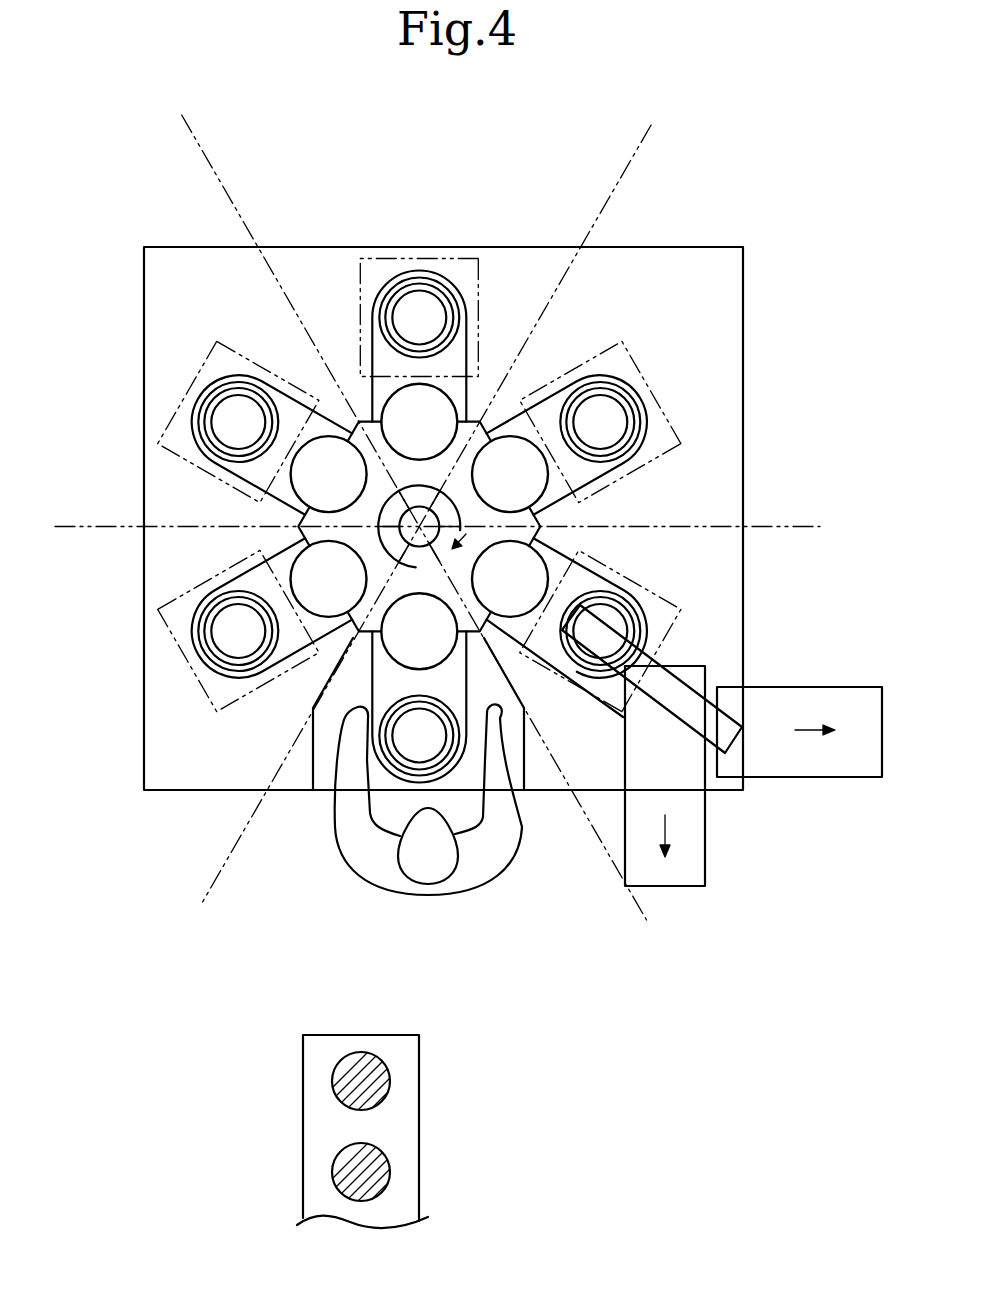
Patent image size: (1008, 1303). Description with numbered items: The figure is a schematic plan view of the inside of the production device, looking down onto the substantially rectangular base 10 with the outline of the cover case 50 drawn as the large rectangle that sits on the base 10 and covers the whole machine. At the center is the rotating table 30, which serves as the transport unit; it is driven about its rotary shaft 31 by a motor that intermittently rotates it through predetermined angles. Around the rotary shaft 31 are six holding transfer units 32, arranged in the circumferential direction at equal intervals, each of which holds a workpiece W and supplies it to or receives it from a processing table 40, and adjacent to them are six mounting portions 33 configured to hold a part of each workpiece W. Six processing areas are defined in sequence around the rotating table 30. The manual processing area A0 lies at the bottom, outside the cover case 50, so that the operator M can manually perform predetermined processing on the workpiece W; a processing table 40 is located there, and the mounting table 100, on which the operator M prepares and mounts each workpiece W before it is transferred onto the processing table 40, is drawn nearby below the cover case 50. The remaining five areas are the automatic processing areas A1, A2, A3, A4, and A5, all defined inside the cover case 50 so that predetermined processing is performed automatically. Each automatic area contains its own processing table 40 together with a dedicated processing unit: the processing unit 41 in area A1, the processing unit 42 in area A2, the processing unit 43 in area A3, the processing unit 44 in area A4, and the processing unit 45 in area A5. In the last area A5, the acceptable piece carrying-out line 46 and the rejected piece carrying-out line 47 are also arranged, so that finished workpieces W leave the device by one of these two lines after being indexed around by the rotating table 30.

The base 10 is at (672, 279).
The cover case 50 is at (318, 247).
The rotating table 30 is at (442, 523).
The rotary shaft 31 is at (432, 543).
The holding transfer unit 32 is at (202, 397).
The mounting portion 33 is at (443, 393).
The processing table 40 is at (227, 393).
The processing unit 41 is at (252, 693).
The processing unit 42 is at (263, 367).
The processing unit 43 is at (358, 280).
The processing unit 44 is at (612, 332).
The processing unit 45 is at (681, 607).
The acceptable piece carrying-out line 46 is at (686, 887).
The rejected piece carrying-out line 47 is at (815, 777).
The operator M is at (495, 887).
The mounting table 100 is at (299, 1138).
The workpiece W is at (388, 1065).
The manual processing area A0 is at (272, 842).
The automatic processing area A1 is at (167, 754).
The automatic processing area A2 is at (194, 279).
The automatic processing area A3 is at (500, 294).
The automatic processing area A4 is at (685, 341).
The automatic processing area A5 is at (700, 599).